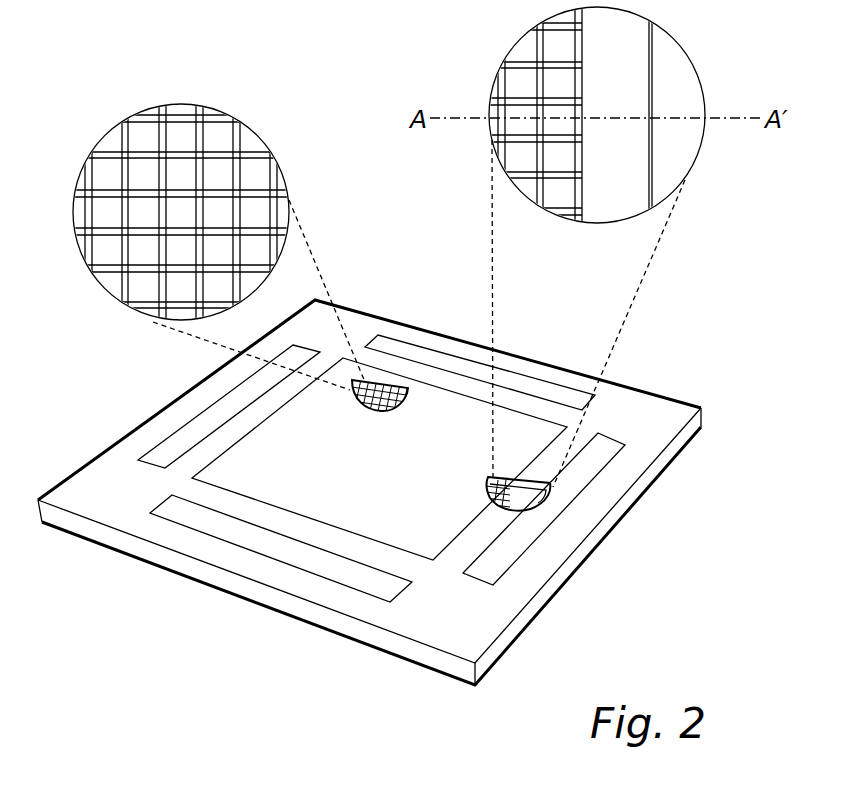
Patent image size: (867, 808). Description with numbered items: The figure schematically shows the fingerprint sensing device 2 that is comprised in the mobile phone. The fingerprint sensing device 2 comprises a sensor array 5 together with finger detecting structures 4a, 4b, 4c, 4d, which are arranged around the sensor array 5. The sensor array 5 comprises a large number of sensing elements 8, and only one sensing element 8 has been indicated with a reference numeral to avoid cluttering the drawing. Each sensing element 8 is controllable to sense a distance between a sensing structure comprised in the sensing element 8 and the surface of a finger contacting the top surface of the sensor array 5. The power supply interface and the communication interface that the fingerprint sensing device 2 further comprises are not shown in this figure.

The fingerprint sensing device 2 is at (442, 276).
The finger detecting structure 4a is at (583, 477).
The finger detecting structure 4b is at (478, 372).
The finger detecting structure 4c is at (218, 418).
The finger detecting structure 4d is at (327, 568).
The sensor array 5 is at (242, 470).
The sensing element 8 is at (217, 250).